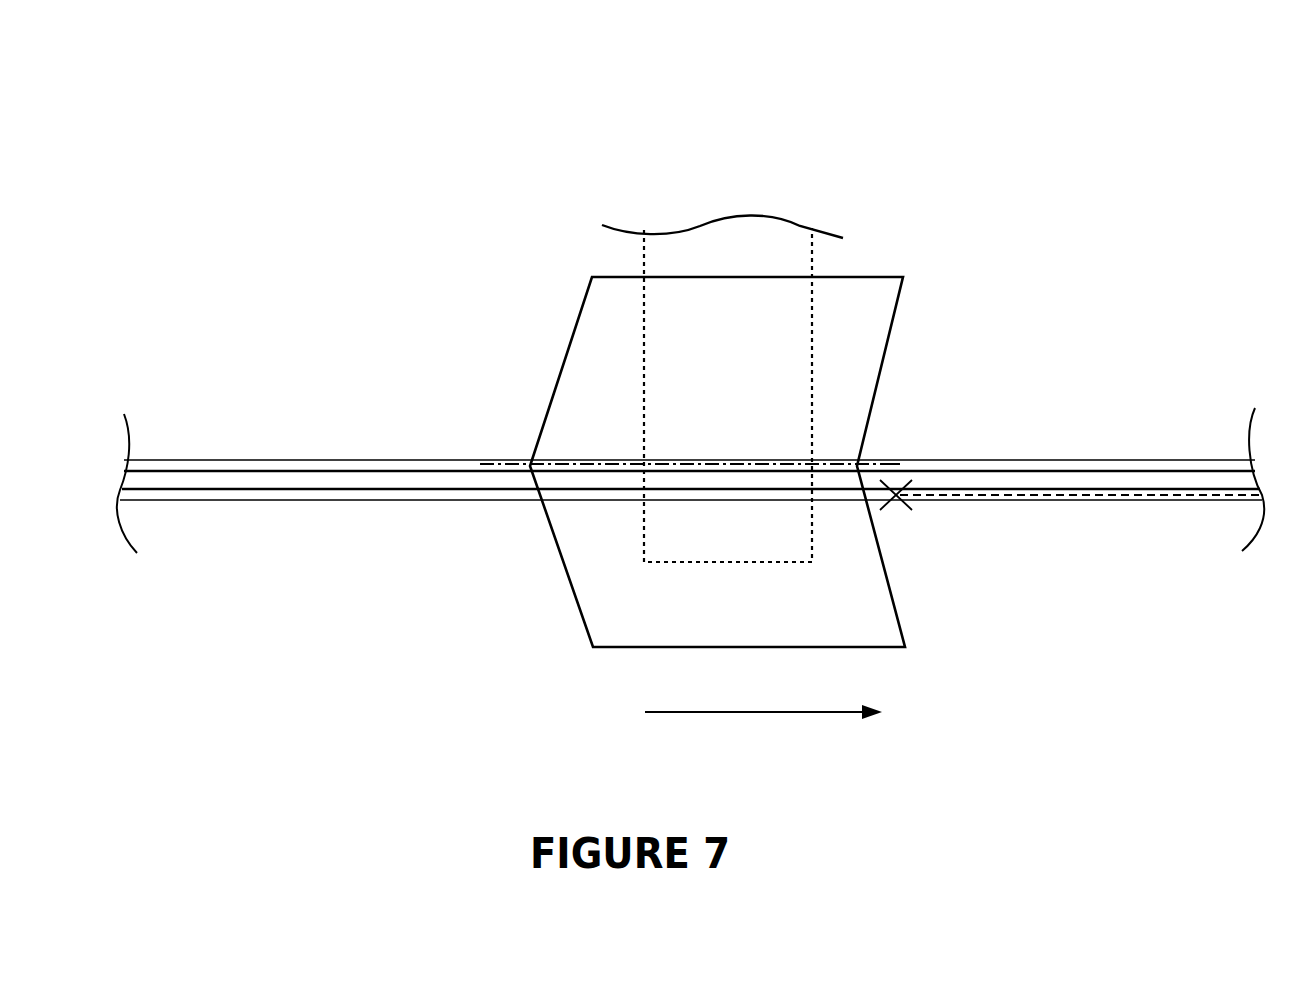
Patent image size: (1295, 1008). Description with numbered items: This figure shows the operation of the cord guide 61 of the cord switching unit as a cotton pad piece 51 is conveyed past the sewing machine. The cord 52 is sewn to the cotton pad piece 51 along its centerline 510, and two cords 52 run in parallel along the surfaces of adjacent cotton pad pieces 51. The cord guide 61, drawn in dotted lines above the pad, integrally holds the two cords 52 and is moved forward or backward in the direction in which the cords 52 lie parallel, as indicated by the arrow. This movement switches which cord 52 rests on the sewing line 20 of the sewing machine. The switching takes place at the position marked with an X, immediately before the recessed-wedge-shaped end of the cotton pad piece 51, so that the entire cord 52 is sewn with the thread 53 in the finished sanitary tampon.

The sewing line 20 is at (583, 462).
The cotton pad piece 51 is at (607, 627).
The cord 52 is at (301, 465).
The thread 53 is at (1042, 478).
The cord guide 61 is at (813, 316).
The centerline 510 is at (893, 462).